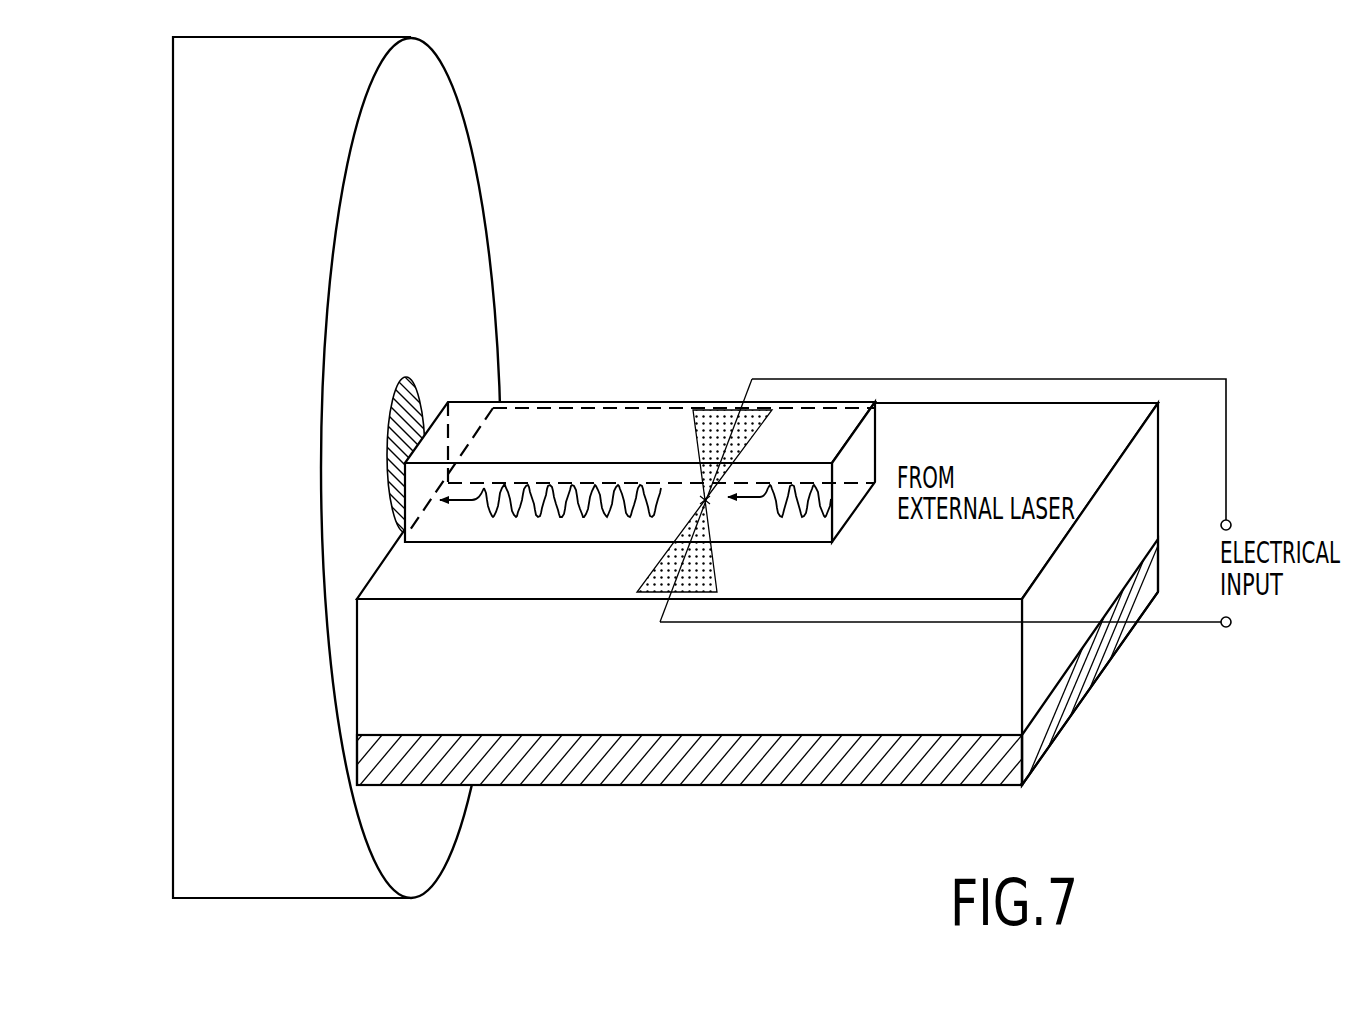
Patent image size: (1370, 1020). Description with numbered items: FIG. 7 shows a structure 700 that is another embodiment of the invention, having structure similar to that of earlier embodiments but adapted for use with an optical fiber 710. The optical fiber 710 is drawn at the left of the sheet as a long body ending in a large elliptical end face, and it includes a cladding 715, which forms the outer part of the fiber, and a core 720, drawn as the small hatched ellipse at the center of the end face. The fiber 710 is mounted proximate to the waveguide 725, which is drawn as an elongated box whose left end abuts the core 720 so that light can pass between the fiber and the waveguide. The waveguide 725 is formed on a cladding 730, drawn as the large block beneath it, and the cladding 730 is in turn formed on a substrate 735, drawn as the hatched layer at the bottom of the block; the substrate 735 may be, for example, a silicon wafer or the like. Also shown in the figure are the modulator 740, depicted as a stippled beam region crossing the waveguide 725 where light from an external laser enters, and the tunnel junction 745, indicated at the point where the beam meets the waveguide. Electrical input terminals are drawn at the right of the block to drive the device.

The structure 700 is at (827, 157).
The optical fiber 710 is at (254, 112).
The cladding 715 is at (467, 262).
The core 720 is at (420, 393).
The waveguide 725 is at (533, 402).
The cladding 730 is at (676, 676).
The substrate 735 is at (750, 779).
The modulator 740 is at (710, 417).
The tunnel junction 745 is at (698, 502).